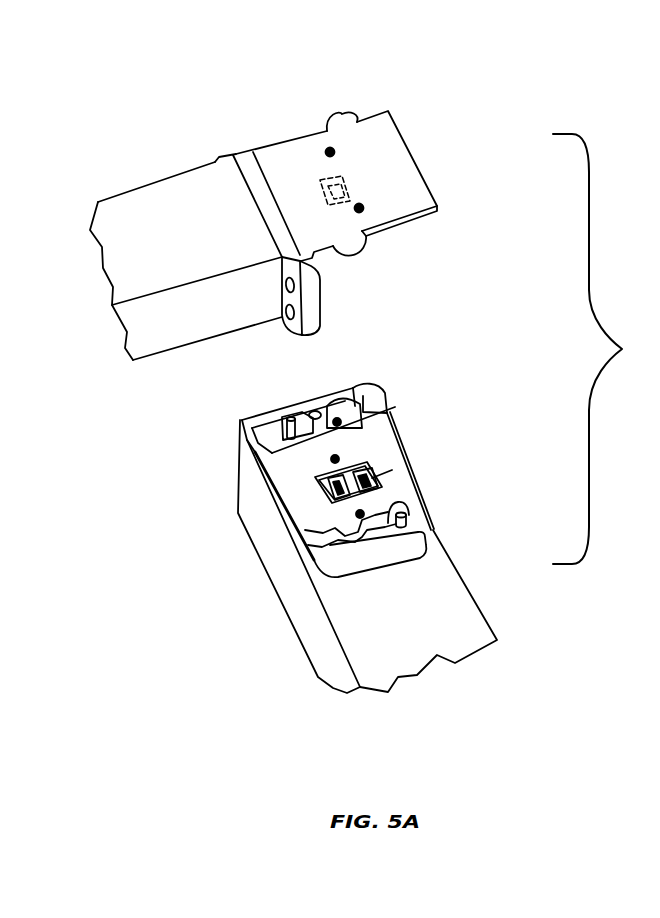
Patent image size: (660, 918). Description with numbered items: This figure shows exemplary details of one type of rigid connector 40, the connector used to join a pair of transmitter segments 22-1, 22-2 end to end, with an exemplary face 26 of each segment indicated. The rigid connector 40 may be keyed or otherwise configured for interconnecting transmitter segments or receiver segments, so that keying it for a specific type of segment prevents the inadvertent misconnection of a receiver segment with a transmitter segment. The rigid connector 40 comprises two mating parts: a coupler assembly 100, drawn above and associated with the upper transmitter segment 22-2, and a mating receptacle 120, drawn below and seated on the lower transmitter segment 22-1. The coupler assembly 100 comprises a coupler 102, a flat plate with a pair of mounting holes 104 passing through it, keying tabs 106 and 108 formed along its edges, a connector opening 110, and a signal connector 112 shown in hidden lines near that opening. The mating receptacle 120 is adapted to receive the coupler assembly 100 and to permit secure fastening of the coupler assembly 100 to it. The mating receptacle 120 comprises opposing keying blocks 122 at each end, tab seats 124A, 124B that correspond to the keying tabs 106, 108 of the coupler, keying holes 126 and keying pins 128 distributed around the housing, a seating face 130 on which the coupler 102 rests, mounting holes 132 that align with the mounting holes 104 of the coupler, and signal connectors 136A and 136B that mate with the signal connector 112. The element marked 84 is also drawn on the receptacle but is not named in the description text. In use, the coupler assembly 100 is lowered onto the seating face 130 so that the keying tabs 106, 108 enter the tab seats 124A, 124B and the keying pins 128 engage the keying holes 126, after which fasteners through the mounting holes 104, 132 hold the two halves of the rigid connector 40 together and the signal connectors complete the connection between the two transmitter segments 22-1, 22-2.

The rigid connector 40 is at (603, 349).
The coupler assembly 100 is at (405, 89).
The coupler 102 is at (407, 137).
The mounting holes 104 is at (328, 149).
The keying tab 106 is at (368, 241).
The keying tab 108 is at (331, 128).
The connector opening 110 is at (352, 193).
The signal connector 112 is at (343, 184).
The transmitter segment 22-2 is at (142, 205).
The transmitter segment 22-1 is at (322, 680).
The face 26 is at (168, 348).
The mating receptacle 120 is at (493, 386).
The keying blocks 122 is at (355, 393).
The tab seat 124A is at (386, 393).
The tab seat 124B is at (290, 418).
The keying holes 126 is at (343, 422).
The keying pins 128 is at (282, 428).
The seating face 130 is at (397, 453).
The connector 84 is at (372, 470).
The mounting holes 132 is at (326, 492).
The signal connector 136A is at (320, 530).
The signal connector 136B is at (374, 476).